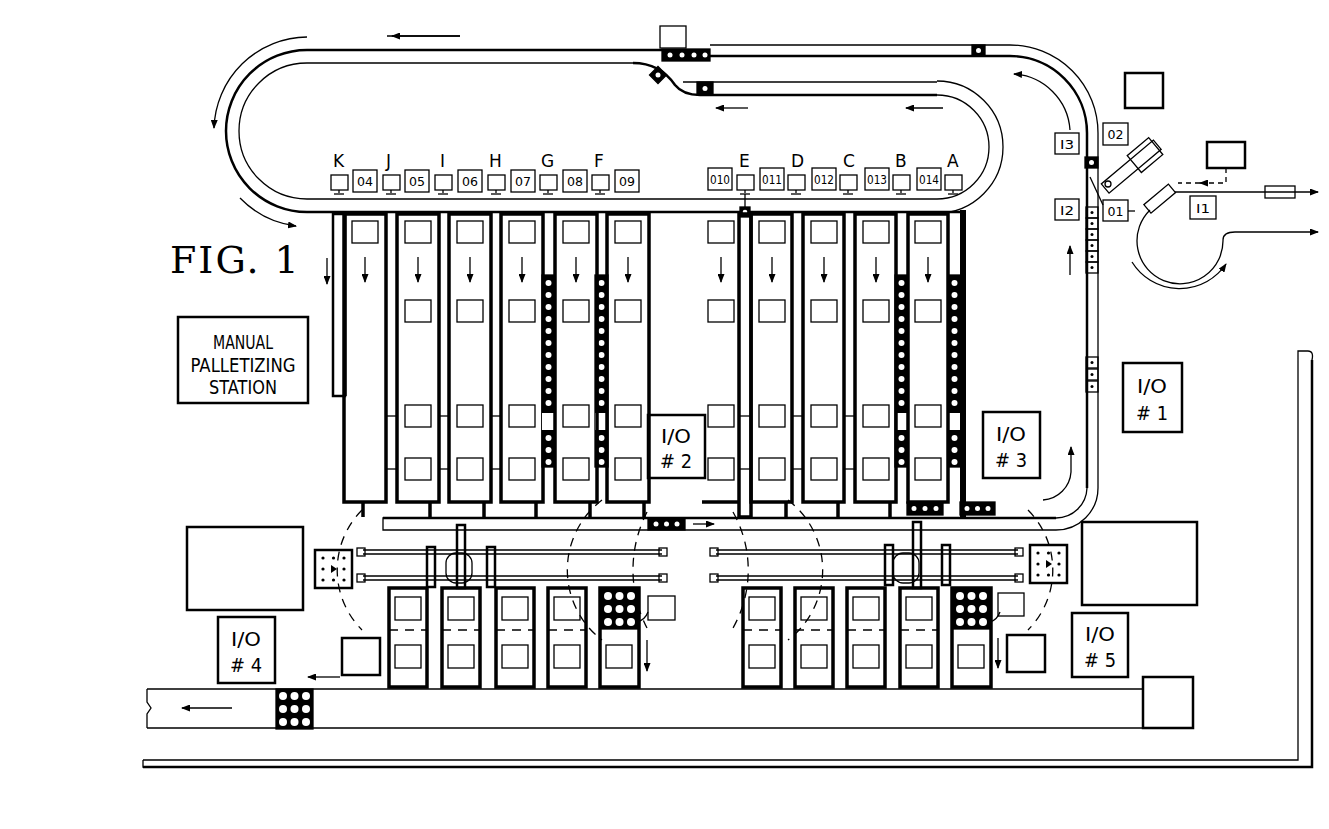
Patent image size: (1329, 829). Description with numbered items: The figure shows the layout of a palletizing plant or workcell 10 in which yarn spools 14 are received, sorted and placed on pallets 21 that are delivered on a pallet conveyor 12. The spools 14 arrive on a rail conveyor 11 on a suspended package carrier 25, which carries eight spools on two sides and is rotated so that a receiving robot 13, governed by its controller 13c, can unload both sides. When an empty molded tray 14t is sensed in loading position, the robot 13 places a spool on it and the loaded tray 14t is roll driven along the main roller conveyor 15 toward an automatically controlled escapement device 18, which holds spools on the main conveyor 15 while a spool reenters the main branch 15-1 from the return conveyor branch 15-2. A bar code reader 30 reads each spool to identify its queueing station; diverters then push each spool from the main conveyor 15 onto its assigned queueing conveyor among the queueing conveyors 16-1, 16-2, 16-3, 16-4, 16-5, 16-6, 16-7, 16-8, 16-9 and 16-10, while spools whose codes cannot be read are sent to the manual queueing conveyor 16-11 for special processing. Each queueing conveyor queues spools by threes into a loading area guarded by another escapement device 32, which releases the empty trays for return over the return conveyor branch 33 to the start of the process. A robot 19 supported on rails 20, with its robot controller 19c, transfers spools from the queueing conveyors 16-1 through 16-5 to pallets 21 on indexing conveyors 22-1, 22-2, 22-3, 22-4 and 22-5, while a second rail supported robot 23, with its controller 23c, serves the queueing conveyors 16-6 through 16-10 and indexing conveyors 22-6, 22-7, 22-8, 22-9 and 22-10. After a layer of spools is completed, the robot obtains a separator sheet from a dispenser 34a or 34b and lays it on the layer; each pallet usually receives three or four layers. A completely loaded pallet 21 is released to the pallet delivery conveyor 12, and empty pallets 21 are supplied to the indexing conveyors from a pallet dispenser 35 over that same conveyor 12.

The palletizing plant 10 is at (1262, 307).
The rail conveyor 11 is at (1245, 191).
The pallet conveyor 12 is at (437, 728).
The receiving robot 13 is at (1152, 168).
The controller 13c is at (1163, 85).
The spools 14 is at (1085, 163).
The molded tray 14t is at (1086, 275).
The main roller conveyor 15 is at (1098, 300).
The main branch 15-1 is at (878, 46).
The return conveyor branch 15-2 is at (1005, 178).
The queueing conveyor 16-1 is at (384, 364).
The queueing conveyor 16-2 is at (437, 364).
The queueing conveyor 16-3 is at (490, 364).
The queueing conveyor 16-4 is at (542, 370).
The queueing conveyor 16-5 is at (610, 333).
The queueing conveyor 16-6 is at (738, 364).
The queueing conveyor 16-7 is at (790, 364).
The queueing conveyor 16-8 is at (843, 364).
The queueing conveyor 16-9 is at (895, 364).
The queueing conveyor 16-10 is at (962, 305).
The manual queueing conveyor 16-11 is at (332, 317).
The escapement device 18 is at (662, 53).
The robot 19 is at (427, 567).
The robot controller 19c is at (342, 655).
The rails 20 is at (726, 578).
The pallets 21 is at (313, 702).
The indexing conveyor 22-1 is at (404, 680).
The indexing conveyor 22-2 is at (458, 680).
The indexing conveyor 22-3 is at (512, 680).
The indexing conveyor 22-4 is at (566, 680).
The indexing conveyor 22-5 is at (614, 680).
The indexing conveyor 22-6 is at (757, 680).
The indexing conveyor 22-7 is at (811, 680).
The indexing conveyor 22-8 is at (868, 680).
The indexing conveyor 22-9 is at (920, 680).
The indexing conveyor 22-10 is at (973, 676).
The rail supported robot 23 is at (930, 561).
The robot controller 23c is at (1015, 618).
The package carrier 25 is at (1282, 186).
The bar code reader 30 is at (1228, 142).
The escapement device 32 is at (548, 470).
The return conveyor branch 33 is at (716, 514).
The dispenser 34a is at (1135, 522).
The dispenser 34b is at (257, 527).
The dispenser 35 is at (1160, 677).